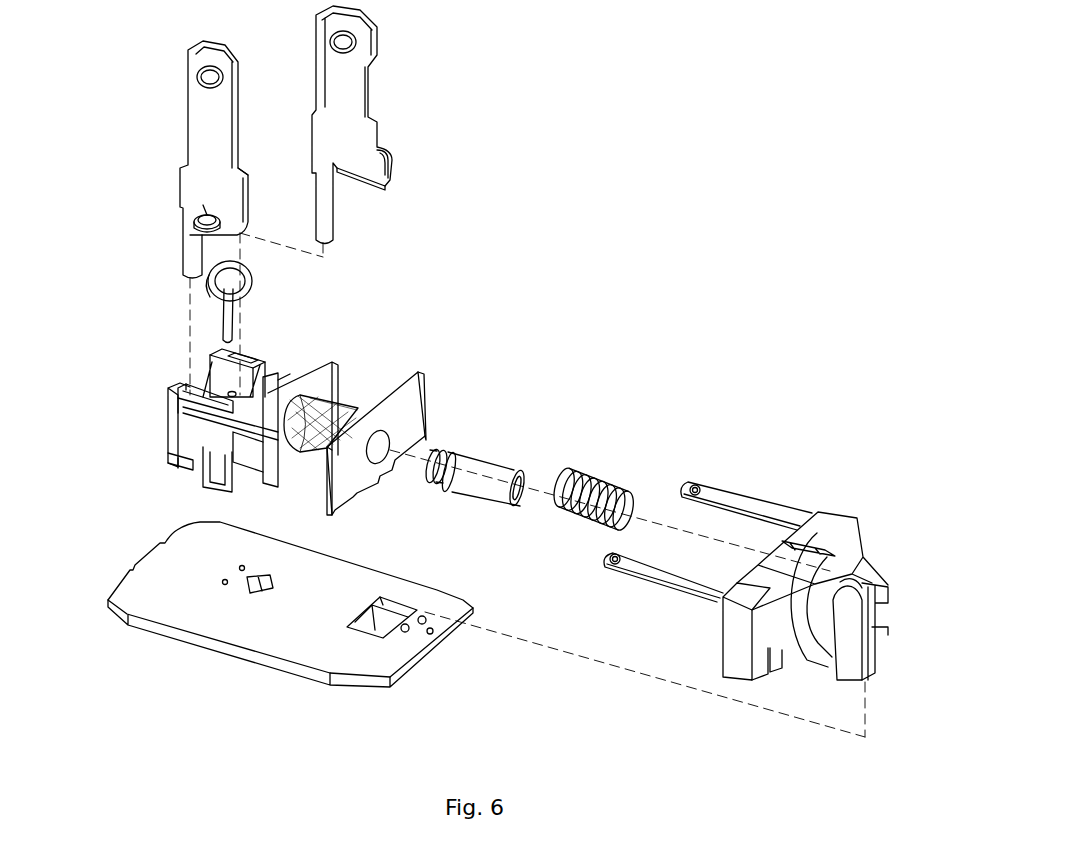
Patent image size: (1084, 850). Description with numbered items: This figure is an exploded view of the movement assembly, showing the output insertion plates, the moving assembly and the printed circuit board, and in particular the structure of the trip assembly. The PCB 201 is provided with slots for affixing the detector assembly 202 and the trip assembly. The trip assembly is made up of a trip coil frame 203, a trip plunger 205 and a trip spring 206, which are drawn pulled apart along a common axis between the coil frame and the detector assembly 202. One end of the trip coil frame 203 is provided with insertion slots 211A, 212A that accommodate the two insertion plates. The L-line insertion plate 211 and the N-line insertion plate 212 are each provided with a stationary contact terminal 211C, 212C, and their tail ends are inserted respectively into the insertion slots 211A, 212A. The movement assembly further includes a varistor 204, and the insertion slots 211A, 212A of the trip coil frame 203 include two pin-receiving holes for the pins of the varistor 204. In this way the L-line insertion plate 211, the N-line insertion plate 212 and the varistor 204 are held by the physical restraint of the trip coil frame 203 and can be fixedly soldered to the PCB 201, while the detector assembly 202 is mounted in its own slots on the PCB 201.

The PCB 201 is at (153, 575).
The detector assembly 202 is at (837, 523).
The trip coil frame 203 is at (167, 413).
The varistor 204 is at (250, 292).
The trip plunger 205 is at (457, 458).
The trip spring 206 is at (593, 480).
The L-line insertion plate 211 is at (195, 97).
The insertion slot 211A is at (202, 387).
The stationary contact terminal 211C is at (200, 200).
The N-line insertion plate 212 is at (372, 92).
The insertion slot 212A is at (257, 357).
The stationary contact terminal 212C is at (388, 147).